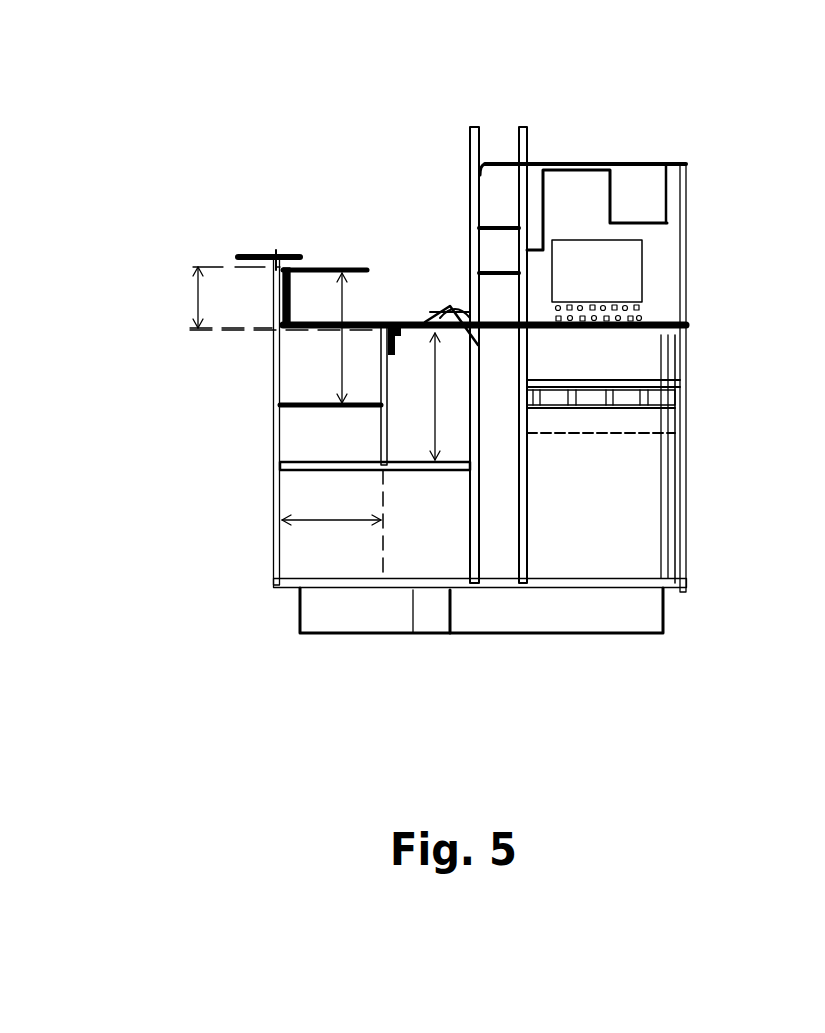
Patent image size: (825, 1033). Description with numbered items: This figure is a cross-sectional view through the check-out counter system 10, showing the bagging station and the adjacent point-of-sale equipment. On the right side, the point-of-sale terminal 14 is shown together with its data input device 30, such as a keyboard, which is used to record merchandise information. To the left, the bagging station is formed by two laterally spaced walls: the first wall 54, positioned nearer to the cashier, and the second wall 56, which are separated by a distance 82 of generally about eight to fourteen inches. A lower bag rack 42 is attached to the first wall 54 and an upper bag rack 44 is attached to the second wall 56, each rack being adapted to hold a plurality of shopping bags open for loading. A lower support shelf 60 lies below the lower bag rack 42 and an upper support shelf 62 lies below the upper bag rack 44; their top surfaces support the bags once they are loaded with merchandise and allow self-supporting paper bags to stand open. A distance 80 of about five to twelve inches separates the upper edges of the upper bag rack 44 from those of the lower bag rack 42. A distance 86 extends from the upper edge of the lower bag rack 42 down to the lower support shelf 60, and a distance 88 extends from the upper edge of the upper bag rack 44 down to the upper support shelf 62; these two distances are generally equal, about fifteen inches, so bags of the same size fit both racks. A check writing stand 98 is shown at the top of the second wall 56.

The check-out counter system 10 is at (438, 332).
The point-of-sale terminal 14 is at (637, 265).
The data input device 30 is at (638, 313).
The lower bag rack 42 is at (423, 318).
The upper bag rack 44 is at (323, 266).
The first wall 54 is at (381, 435).
The second wall 56 is at (273, 365).
The lower support shelf 60 is at (433, 400).
The upper support shelf 62 is at (322, 405).
The distance 80 is at (197, 298).
The distance 82 is at (337, 522).
The distance 86 is at (437, 337).
The distance 88 is at (347, 298).
The check writing stand 98 is at (268, 254).